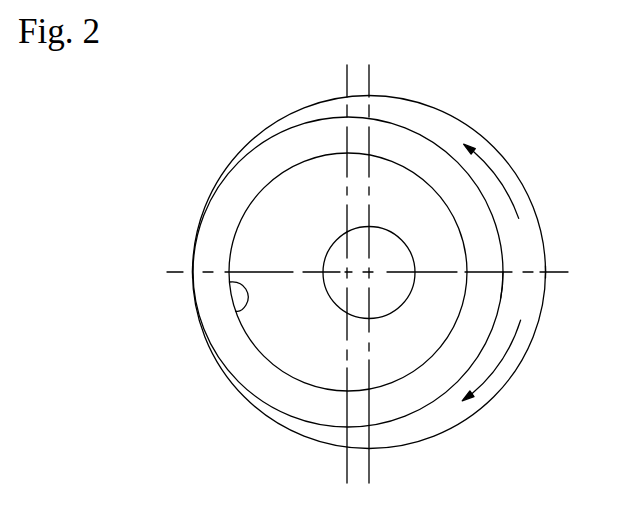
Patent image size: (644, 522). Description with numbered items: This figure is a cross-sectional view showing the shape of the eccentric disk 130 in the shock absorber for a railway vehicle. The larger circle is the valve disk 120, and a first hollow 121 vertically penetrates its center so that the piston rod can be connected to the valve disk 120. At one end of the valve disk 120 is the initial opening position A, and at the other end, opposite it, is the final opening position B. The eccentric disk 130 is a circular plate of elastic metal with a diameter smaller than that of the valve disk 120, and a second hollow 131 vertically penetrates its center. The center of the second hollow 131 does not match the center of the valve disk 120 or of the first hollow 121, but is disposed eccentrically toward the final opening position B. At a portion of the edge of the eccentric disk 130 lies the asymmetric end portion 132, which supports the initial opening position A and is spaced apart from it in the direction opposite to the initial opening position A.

The valve disk 120 is at (495, 130).
The first hollow 121 is at (333, 306).
The eccentric disk 130 is at (223, 343).
The second hollow 131 is at (229, 285).
The asymmetric end portion 132 is at (505, 273).
The initial opening position A is at (548, 273).
The final opening position B is at (193, 273).